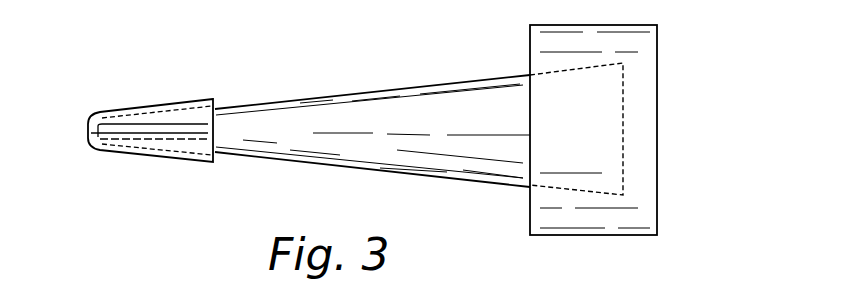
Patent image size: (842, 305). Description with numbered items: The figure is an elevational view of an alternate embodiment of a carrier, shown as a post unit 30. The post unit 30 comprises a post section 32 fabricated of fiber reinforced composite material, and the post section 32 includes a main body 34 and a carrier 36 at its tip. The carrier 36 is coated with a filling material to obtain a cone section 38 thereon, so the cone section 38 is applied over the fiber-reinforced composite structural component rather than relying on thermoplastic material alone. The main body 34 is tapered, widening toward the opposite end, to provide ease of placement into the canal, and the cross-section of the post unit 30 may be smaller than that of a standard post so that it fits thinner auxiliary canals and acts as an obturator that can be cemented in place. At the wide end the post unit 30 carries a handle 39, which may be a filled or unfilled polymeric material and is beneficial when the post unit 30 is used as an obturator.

The post unit 30 is at (175, 62).
The post section 32 is at (387, 90).
The main body 34 is at (400, 127).
The carrier 36 is at (168, 128).
The cone section 38 is at (132, 115).
The handle 39 is at (645, 83).